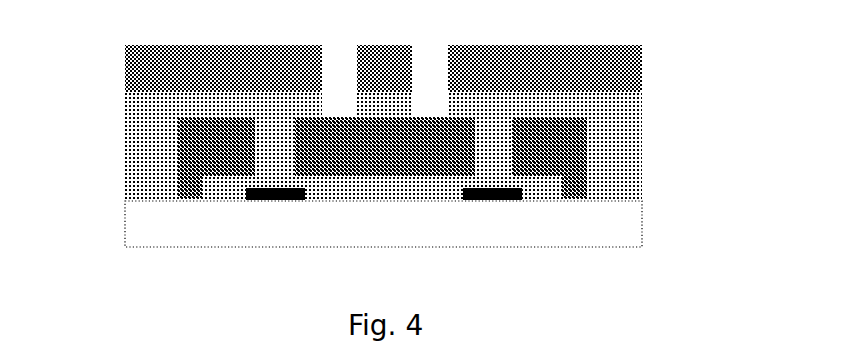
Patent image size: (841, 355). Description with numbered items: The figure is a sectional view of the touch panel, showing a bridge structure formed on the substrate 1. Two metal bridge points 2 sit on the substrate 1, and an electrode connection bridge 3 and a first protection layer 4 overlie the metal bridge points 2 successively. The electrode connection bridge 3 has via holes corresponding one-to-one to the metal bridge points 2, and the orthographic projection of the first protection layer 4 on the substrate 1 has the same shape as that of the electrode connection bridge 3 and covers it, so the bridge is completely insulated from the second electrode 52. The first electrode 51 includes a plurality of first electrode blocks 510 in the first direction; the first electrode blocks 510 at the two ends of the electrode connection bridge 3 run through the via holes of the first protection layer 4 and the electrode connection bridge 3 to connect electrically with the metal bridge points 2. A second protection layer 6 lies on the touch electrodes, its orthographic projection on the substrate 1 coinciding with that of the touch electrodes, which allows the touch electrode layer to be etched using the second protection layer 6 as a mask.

The substrate 1 is at (125, 221).
The metal bridge point 2 is at (274, 201).
The electrode connection bridge 3 is at (192, 172).
The first protection layer 4 is at (177, 121).
The first electrode 51 is at (125, 97).
The first electrode block 510 is at (374, 146).
The second electrode 52 is at (378, 95).
The second protection layer 6 is at (125, 50).